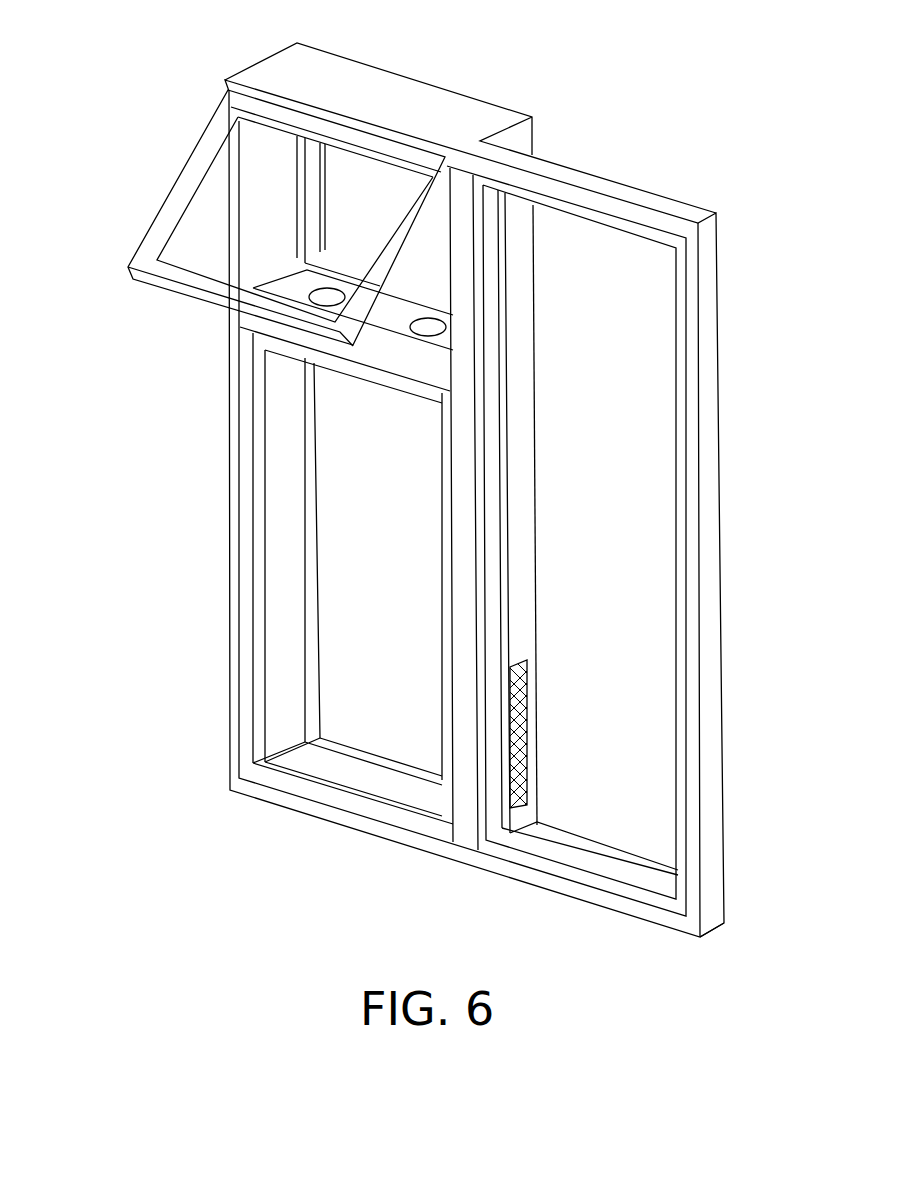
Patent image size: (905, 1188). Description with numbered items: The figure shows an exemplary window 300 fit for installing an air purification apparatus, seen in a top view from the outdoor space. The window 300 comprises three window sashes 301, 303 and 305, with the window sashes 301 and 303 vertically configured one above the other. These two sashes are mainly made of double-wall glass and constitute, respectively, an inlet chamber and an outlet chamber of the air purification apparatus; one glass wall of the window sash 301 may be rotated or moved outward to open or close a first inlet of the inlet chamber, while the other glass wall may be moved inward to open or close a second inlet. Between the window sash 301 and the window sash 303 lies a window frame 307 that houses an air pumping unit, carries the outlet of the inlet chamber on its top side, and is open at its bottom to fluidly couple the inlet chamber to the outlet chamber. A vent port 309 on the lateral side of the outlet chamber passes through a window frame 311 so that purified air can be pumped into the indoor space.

The window 300 is at (303, 75).
The window sash 301 is at (176, 212).
The window sash 303 is at (296, 645).
The window sash 305 is at (637, 455).
The window frame 307 is at (333, 353).
The vent port 309 is at (524, 776).
The window frame 311 is at (535, 585).